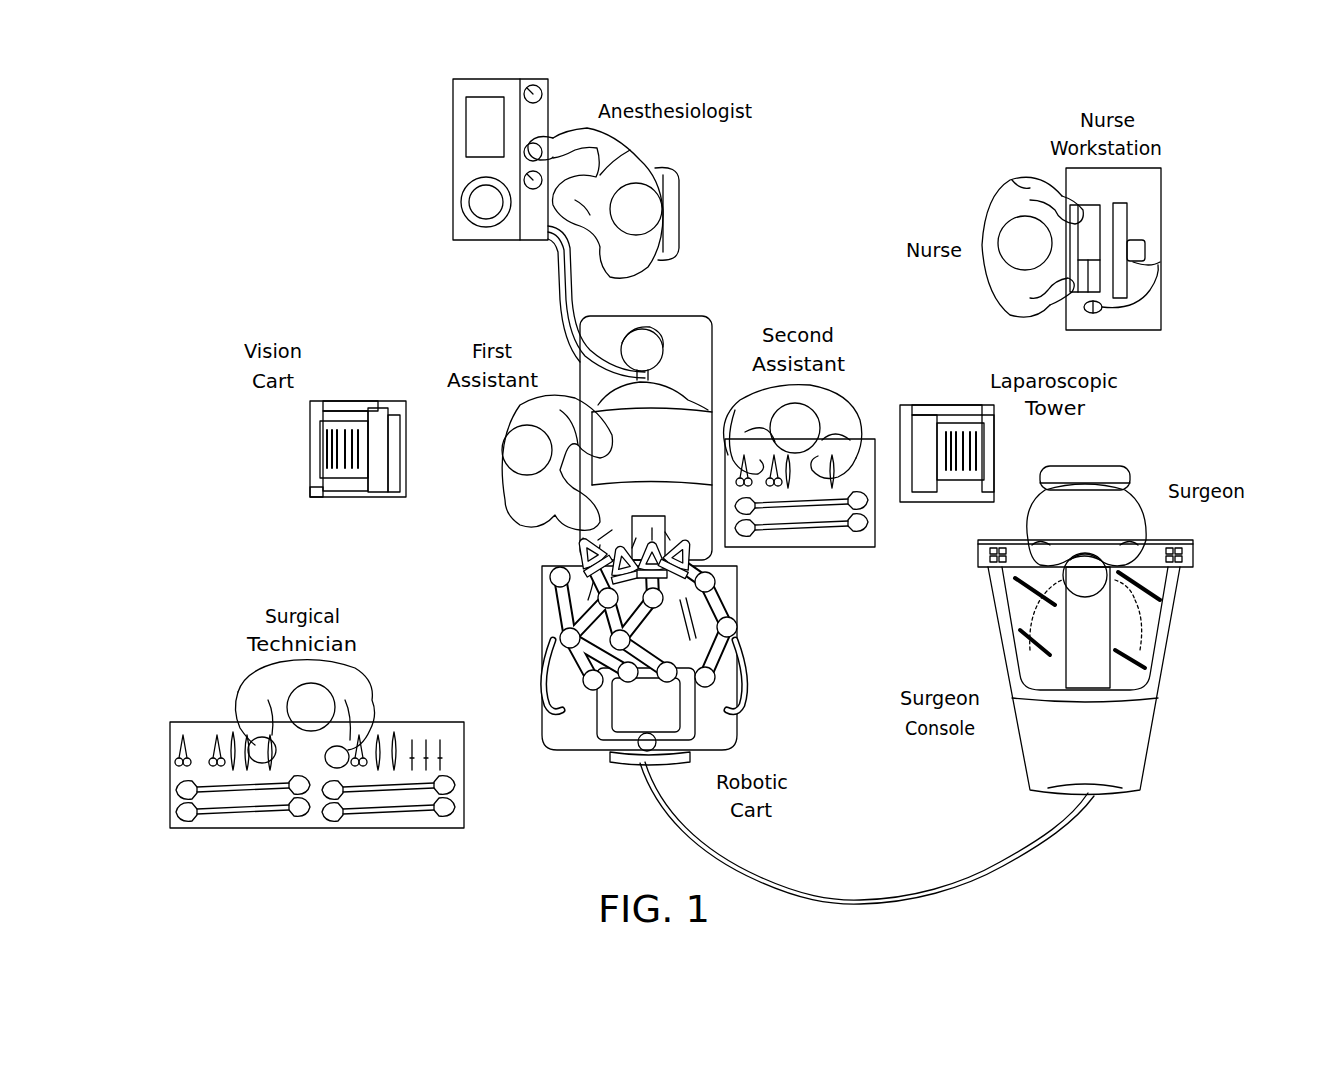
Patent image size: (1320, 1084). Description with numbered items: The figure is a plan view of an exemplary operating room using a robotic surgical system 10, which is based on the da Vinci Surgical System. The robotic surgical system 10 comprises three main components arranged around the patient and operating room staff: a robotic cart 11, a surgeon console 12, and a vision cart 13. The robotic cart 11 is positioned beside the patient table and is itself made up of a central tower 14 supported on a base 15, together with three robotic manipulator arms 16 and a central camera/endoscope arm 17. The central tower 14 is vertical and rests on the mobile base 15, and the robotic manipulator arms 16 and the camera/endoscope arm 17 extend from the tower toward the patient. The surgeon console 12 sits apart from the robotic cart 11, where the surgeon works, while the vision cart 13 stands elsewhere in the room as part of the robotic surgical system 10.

The robotic surgical system 10 is at (276, 289).
The robotic cart 11 is at (602, 782).
The surgeon console 12 is at (1170, 738).
The vision cart 13 is at (295, 512).
The central tower 14 is at (657, 716).
The base 15 is at (737, 722).
The robotic manipulator arms 16 is at (570, 638).
The central camera/endoscope arm 17 is at (560, 577).